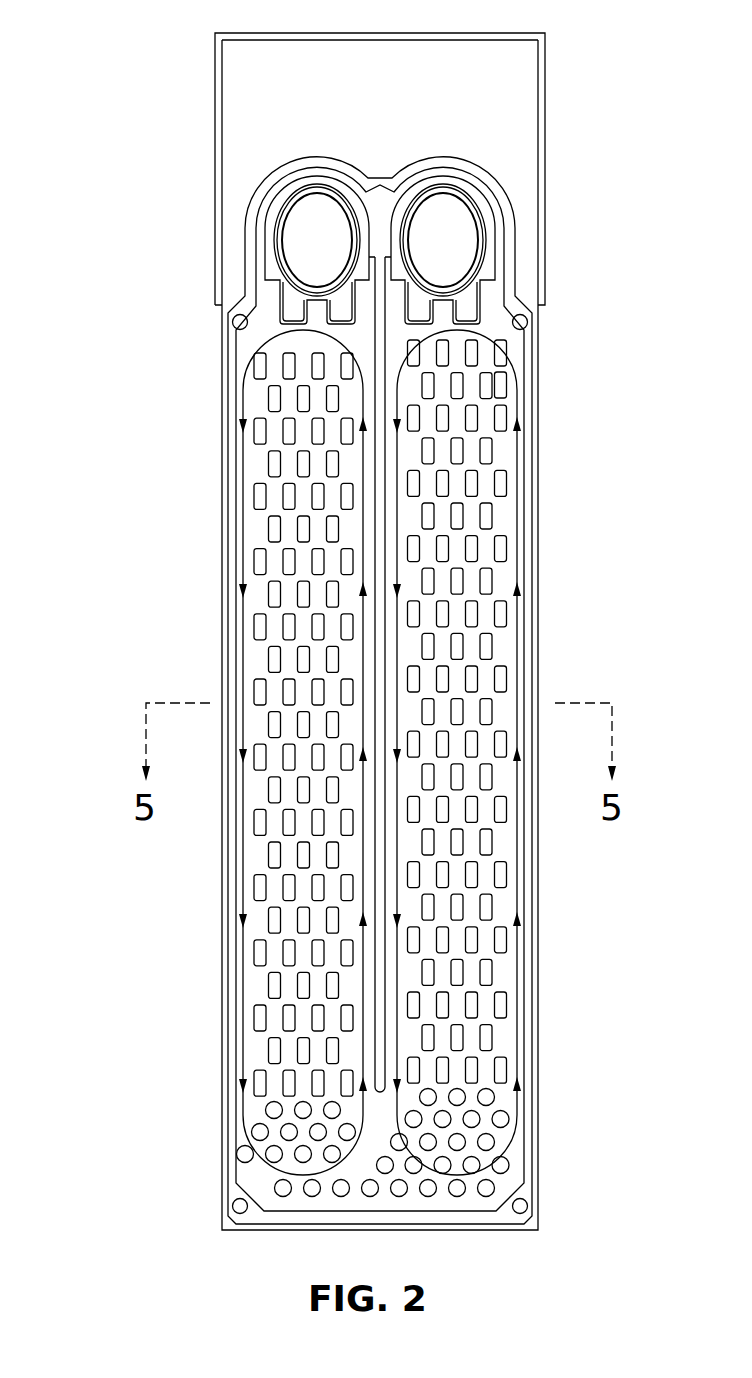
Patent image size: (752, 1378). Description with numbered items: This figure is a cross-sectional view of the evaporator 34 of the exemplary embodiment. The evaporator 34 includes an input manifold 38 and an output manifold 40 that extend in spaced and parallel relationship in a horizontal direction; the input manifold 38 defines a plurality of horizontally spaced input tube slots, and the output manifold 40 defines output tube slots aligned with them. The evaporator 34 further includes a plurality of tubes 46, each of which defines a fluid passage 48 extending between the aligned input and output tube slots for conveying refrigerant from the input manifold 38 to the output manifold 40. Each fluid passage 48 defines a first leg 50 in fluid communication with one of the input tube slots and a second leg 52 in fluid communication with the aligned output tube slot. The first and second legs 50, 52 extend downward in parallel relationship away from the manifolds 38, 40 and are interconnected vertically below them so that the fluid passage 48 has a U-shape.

The evaporator 34 is at (152, 53).
The input manifold 38 is at (288, 237).
The output manifold 40 is at (472, 237).
The tube 46 is at (540, 348).
The fluid passage 48 is at (527, 62).
The first leg 50 is at (487, 514).
The second leg 52 is at (268, 466).